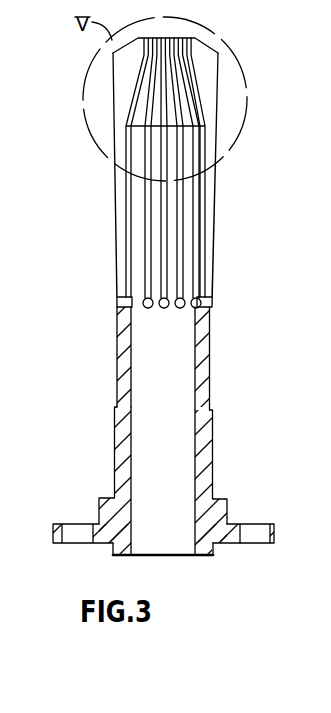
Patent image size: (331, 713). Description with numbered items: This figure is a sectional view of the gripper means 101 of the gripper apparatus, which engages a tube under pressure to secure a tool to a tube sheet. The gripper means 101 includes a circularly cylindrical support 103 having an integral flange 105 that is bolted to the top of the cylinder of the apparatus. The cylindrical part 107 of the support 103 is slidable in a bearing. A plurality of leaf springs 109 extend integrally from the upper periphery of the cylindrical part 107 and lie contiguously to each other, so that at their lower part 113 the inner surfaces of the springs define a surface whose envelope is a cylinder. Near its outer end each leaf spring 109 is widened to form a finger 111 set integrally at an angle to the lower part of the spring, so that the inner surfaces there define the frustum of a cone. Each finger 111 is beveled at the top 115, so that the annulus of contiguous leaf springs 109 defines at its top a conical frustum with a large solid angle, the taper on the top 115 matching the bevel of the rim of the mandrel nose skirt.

The gripper means 101 is at (224, 147).
The circularly cylindrical support 103 is at (272, 445).
The integral flange 105 is at (214, 542).
The cylindrical part 107 is at (201, 345).
The leaf springs 109 is at (120, 218).
The finger 111 is at (193, 79).
The lower part 113 is at (124, 169).
The top 115 is at (214, 40).